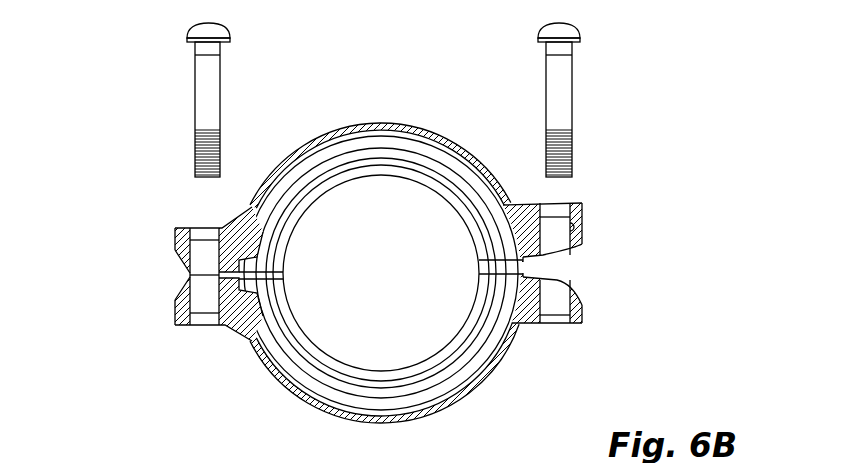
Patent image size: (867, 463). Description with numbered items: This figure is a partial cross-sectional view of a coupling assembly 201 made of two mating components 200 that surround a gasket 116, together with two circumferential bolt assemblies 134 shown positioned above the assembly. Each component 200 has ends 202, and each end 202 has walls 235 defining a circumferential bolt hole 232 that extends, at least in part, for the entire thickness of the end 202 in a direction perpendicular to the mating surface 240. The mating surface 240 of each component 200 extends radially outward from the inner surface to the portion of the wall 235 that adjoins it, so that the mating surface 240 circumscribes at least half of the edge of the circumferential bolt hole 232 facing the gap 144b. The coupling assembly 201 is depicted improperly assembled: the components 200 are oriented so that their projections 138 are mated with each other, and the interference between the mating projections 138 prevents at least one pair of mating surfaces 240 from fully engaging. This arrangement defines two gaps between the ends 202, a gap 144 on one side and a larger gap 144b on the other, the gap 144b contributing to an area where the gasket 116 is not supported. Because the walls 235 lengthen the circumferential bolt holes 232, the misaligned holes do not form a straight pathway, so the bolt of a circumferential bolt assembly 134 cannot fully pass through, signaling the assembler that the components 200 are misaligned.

The circumferential bolt assembly 134 is at (190, 26).
The coupling assembly 201 is at (420, 90).
The component 200 is at (314, 145).
The gasket 116 is at (355, 176).
The projection 138 is at (505, 272).
The circumferential bolt hole 232 is at (205, 224).
The end 202 is at (176, 240).
The wall 235 is at (585, 231).
The mating surface 240 is at (548, 259).
The gap 144 is at (170, 250).
The gap 144b is at (590, 250).